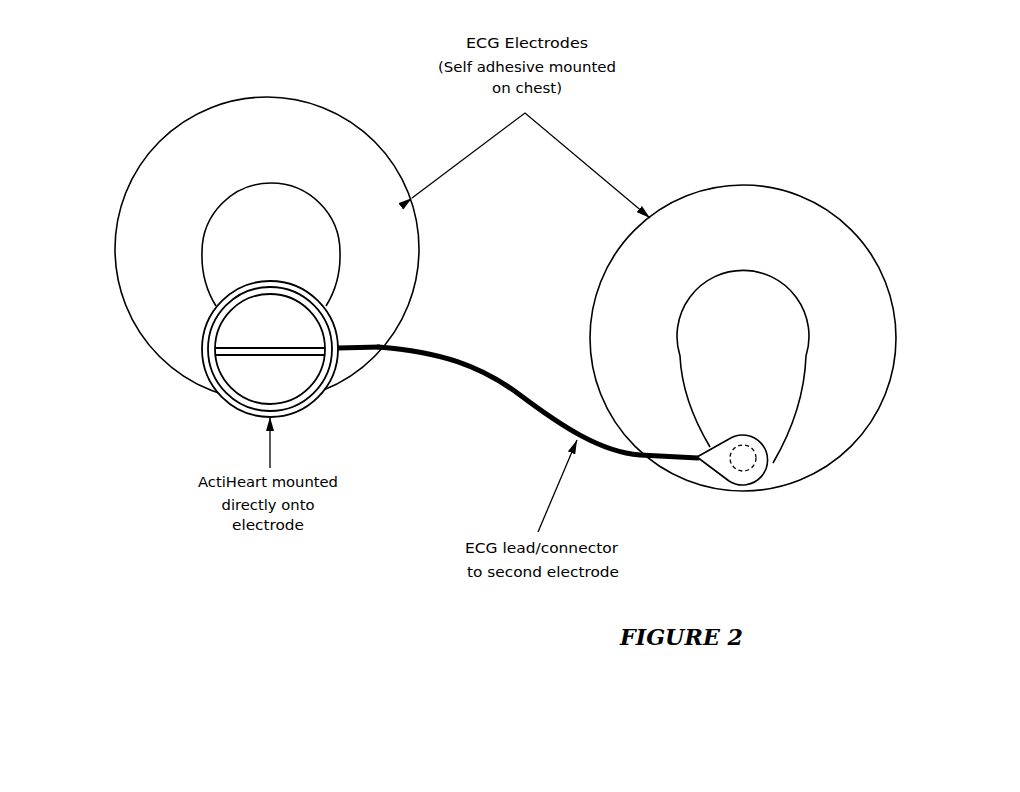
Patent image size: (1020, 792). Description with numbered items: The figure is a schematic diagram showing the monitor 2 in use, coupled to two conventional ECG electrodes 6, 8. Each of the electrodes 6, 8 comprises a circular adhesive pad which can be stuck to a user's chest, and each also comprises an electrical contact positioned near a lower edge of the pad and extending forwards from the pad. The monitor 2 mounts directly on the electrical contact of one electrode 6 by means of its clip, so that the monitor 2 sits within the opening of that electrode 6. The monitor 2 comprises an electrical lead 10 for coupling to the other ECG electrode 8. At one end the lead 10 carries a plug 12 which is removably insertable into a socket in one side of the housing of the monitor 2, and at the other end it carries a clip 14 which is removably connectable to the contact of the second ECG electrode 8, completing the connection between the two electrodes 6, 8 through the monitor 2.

The monitor 2 is at (218, 383).
The ECG electrode 6 is at (162, 177).
The ECG electrode 8 is at (830, 230).
The electrical lead 10 is at (485, 368).
The plug 12 is at (353, 357).
The clip 14 is at (748, 462).